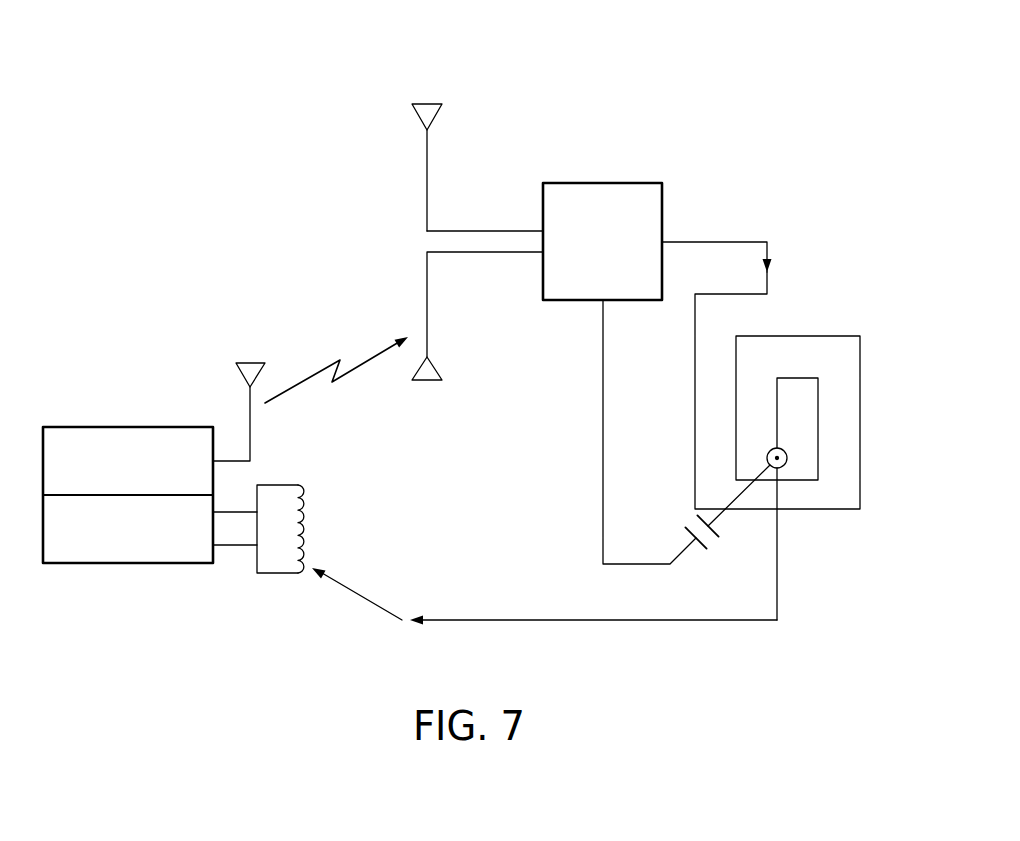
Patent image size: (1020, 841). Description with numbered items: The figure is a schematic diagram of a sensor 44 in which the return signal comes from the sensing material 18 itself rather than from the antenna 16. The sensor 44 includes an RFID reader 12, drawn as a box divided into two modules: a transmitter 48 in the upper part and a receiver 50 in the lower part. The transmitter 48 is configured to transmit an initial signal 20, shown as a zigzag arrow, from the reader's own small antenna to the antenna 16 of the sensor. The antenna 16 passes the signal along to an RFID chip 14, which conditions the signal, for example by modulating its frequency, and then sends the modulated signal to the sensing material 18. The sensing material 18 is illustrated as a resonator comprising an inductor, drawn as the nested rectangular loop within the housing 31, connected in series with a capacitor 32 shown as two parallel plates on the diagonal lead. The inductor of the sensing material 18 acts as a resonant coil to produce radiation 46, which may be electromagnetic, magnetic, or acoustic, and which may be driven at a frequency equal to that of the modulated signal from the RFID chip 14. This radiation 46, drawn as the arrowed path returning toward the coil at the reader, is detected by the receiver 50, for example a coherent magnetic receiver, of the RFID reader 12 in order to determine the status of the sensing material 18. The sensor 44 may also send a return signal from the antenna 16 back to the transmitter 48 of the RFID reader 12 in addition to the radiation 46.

The RFID reader 12 is at (173, 463).
The RFID chip 14 is at (598, 183).
The antenna 16 is at (428, 149).
The sensing material 18 is at (808, 429).
The initial signal 20 is at (362, 362).
The housing 31 is at (861, 395).
The capacitor 32 is at (687, 535).
The sensor 44 is at (761, 73).
The radiation 46 is at (617, 622).
The transmitter 48 is at (88, 447).
The receiver 50 is at (88, 543).